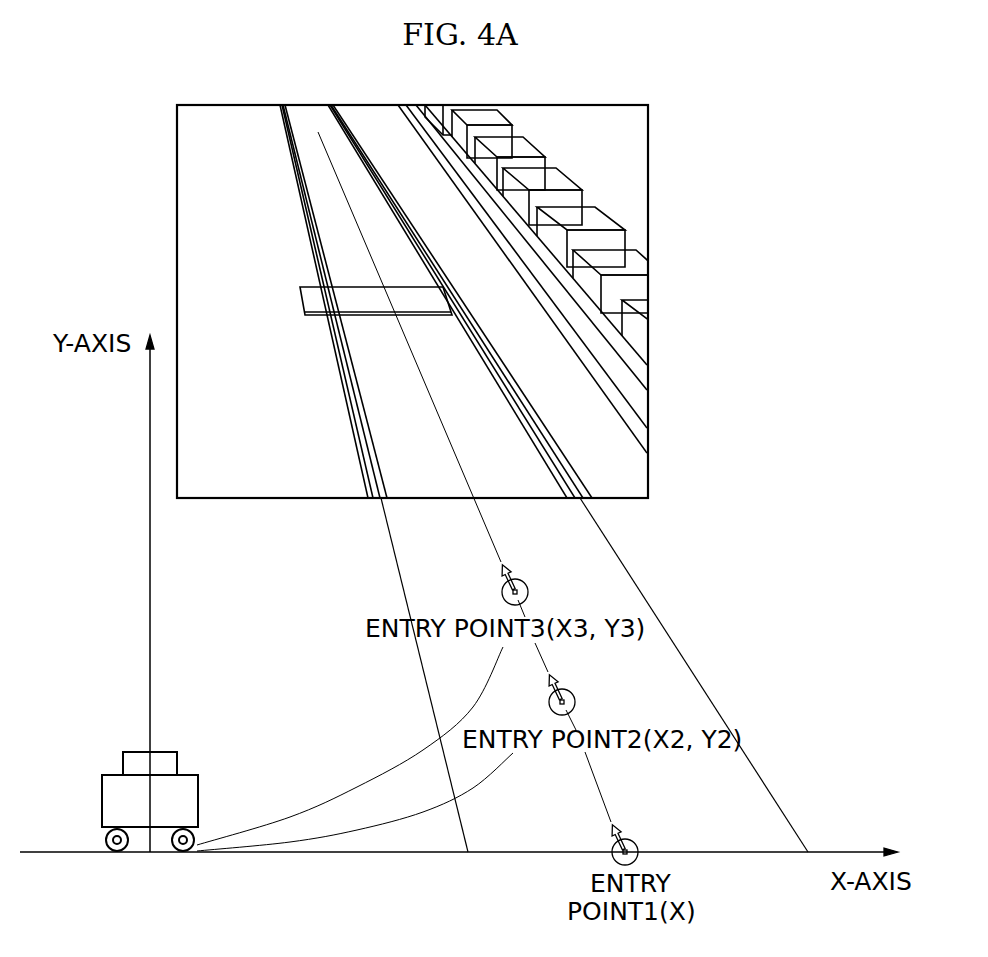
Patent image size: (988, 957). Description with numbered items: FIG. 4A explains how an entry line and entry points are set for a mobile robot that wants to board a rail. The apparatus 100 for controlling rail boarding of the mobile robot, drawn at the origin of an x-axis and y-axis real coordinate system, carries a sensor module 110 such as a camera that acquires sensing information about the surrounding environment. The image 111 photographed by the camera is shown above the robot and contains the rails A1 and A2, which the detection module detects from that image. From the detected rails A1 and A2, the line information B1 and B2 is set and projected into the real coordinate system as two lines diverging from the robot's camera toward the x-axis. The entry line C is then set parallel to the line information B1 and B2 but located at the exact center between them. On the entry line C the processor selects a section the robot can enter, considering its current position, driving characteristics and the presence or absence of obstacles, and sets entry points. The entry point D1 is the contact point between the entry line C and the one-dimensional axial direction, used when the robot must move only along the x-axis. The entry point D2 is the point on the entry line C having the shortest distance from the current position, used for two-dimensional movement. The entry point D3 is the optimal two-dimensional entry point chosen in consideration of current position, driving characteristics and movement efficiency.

The apparatus for controlling rail boarding of a mobile robot 100 is at (100, 815).
The sensor module 110 is at (133, 752).
The captured image 111 is at (648, 155).
The rail A1 is at (285, 140).
The rail A2 is at (330, 115).
The line information B1 is at (458, 823).
The line information B2 is at (662, 625).
The entry line C is at (590, 765).
The entry point D1 is at (637, 841).
The entry point D2 is at (575, 703).
The entry point D3 is at (528, 585).